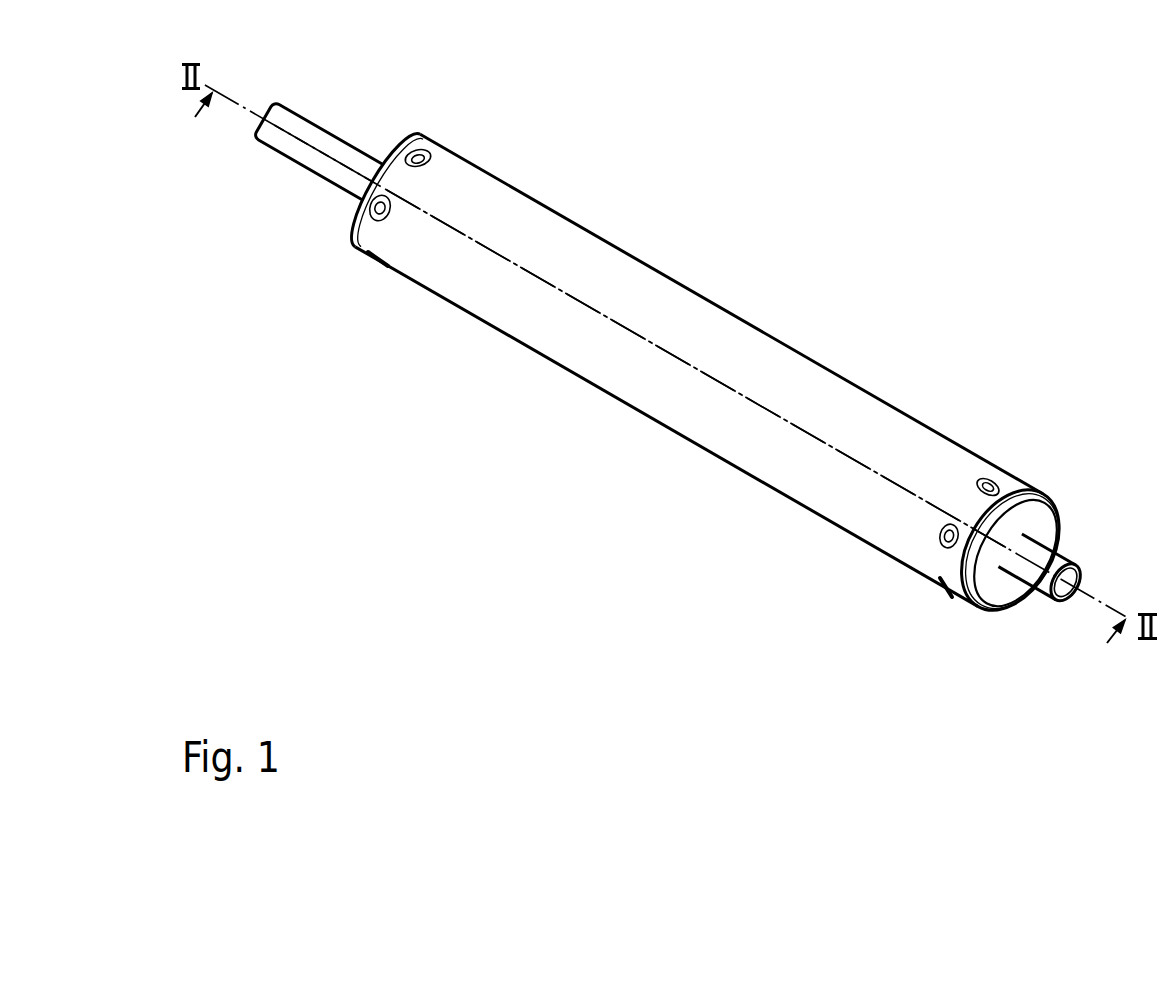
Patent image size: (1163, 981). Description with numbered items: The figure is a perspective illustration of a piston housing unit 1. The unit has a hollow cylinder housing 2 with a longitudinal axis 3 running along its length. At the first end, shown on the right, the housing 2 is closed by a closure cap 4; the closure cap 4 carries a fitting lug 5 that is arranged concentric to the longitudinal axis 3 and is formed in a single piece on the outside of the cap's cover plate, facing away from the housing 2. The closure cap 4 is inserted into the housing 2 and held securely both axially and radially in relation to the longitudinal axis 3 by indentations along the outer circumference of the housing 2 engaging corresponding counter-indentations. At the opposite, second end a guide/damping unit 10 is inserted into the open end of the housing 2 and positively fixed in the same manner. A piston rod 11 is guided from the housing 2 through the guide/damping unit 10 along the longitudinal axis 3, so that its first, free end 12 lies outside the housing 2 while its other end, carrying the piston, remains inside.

The piston housing unit 1 is at (592, 487).
The hollow cylinder housing 2 is at (737, 468).
The longitudinal axis 3 is at (548, 287).
The closure cap 4 is at (983, 580).
The fitting lug 5 is at (1043, 590).
The guide/damping unit 10 is at (351, 236).
The piston rod 11 is at (317, 167).
The first, free end 12 is at (283, 161).